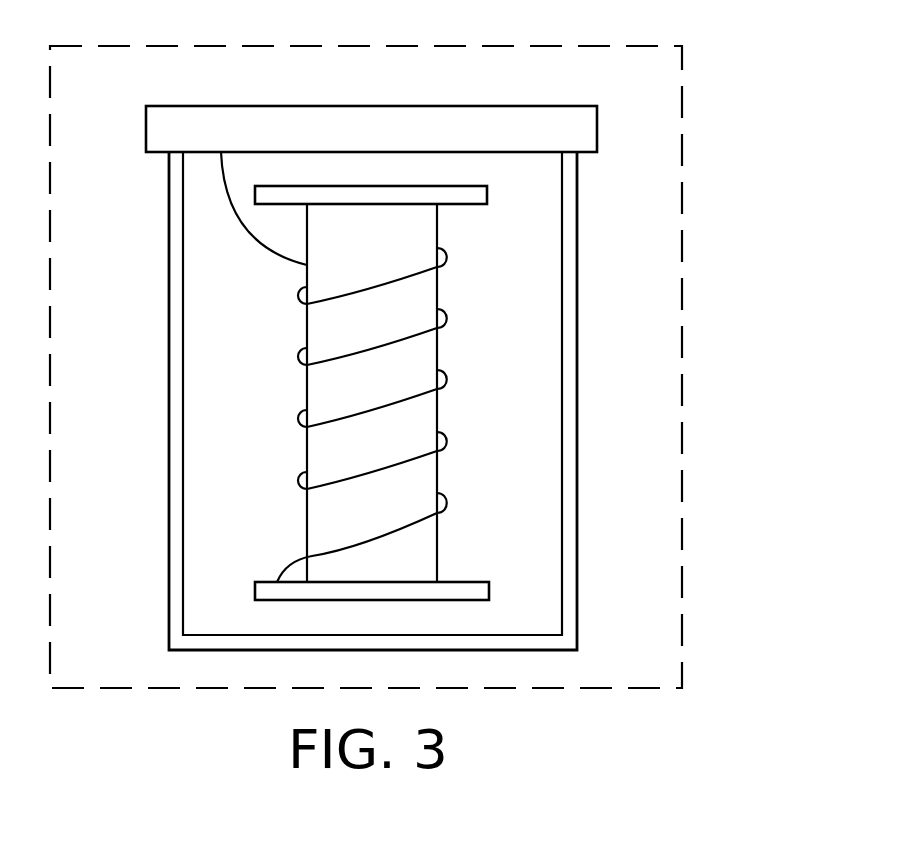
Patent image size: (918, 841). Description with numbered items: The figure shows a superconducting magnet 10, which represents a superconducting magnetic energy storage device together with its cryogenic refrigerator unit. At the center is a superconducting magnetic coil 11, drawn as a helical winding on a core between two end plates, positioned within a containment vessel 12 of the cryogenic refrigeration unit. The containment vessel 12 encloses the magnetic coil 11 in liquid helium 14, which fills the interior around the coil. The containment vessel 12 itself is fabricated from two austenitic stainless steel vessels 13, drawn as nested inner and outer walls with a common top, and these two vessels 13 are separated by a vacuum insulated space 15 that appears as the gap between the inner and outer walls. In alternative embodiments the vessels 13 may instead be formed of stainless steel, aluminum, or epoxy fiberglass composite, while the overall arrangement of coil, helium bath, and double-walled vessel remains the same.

The superconducting magnet 10 is at (728, 121).
The magnetic coil 11 is at (443, 374).
The containment vessel 12 is at (385, 401).
The austenitic stainless steel vessels 13 is at (170, 377).
The liquid helium 14 is at (488, 482).
The vacuum insulated space 15 is at (183, 402).